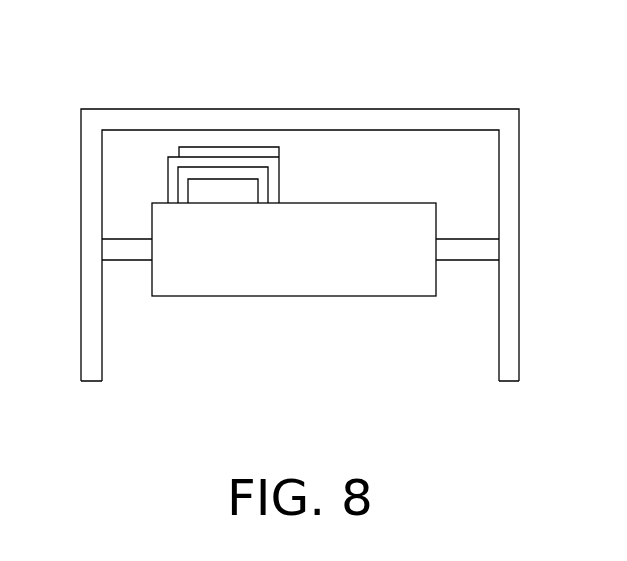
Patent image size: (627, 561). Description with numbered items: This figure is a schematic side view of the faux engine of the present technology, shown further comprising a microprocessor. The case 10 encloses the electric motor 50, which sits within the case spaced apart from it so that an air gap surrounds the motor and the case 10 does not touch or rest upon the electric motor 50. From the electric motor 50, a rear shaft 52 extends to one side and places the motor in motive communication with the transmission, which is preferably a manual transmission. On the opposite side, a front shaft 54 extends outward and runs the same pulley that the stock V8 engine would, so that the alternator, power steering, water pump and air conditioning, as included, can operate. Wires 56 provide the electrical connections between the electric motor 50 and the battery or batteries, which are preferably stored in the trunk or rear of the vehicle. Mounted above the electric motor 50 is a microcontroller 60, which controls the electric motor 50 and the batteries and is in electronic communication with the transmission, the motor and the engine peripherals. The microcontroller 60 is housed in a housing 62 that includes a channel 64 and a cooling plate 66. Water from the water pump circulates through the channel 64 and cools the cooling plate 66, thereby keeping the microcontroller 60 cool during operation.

The case 10 is at (519, 109).
The electric motor 50 is at (329, 268).
The rear shaft 52 is at (471, 248).
The front shaft 54 is at (132, 249).
The wires 56 is at (172, 190).
The microcontroller 60 is at (215, 188).
The housing 62 is at (255, 111).
The channel 64 is at (263, 188).
The cooling plate 66 is at (257, 152).